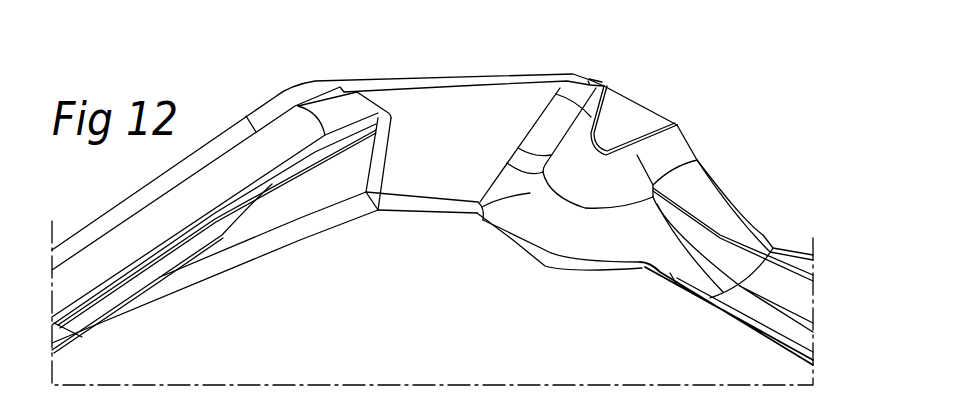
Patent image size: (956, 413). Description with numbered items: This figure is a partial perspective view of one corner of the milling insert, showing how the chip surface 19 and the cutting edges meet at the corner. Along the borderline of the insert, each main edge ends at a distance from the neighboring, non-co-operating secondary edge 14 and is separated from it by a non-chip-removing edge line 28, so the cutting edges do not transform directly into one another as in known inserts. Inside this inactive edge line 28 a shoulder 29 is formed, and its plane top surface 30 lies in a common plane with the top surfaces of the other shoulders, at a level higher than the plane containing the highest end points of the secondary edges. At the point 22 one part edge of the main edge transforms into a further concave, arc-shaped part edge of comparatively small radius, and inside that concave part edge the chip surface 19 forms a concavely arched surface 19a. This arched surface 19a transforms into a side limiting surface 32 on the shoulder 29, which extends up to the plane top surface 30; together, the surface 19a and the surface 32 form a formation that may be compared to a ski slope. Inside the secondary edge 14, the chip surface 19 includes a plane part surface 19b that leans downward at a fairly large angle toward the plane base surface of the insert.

The secondary edge 14 is at (488, 75).
The plane part surface 19b is at (491, 139).
The non-chip-removing edge line 28 is at (638, 98).
The top surface 30 is at (634, 129).
The side limiting surface 32 is at (676, 164).
The shoulder 29 is at (585, 213).
The concavely arched surface 19a is at (697, 197).
The point 22 is at (773, 243).
The chip surface 19 is at (797, 298).